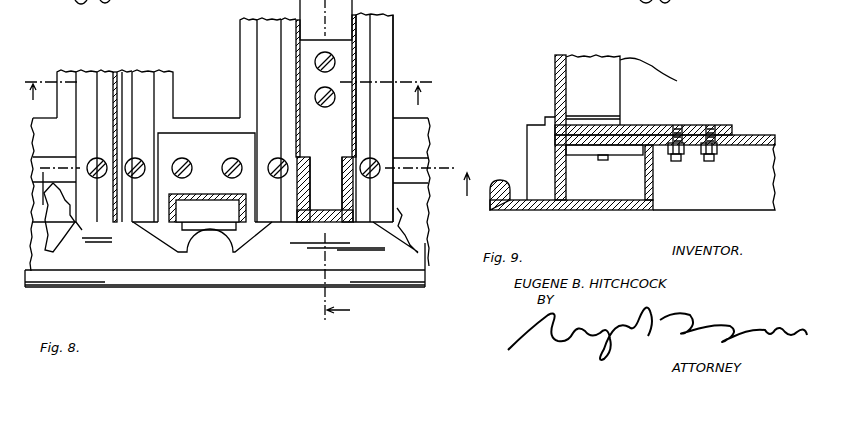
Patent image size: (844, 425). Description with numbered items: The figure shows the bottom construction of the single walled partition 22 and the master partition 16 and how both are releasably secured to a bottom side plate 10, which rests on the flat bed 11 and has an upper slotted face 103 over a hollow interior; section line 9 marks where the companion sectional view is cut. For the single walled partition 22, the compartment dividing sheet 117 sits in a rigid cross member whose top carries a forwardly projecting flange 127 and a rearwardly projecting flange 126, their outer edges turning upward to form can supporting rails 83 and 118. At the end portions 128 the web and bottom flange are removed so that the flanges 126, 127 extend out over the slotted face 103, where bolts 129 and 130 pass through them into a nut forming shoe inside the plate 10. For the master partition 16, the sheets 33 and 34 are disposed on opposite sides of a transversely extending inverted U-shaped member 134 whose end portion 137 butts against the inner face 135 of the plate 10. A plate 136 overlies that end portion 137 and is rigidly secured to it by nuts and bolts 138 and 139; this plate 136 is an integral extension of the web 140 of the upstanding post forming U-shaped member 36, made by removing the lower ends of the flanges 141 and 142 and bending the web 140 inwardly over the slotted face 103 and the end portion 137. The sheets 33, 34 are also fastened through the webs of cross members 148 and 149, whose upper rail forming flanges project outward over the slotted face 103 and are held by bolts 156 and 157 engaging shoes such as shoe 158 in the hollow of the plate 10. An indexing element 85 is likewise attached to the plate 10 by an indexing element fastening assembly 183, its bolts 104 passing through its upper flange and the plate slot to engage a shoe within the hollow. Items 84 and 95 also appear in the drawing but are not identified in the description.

In FIG. 8, the section line 9— 9 is at (328, 277).
In FIG. 8, the side plate 10 is at (62, 165).
In FIG. 9, the side plate 10 is at (655, 173).
In FIG. 8, the flat bed 11 is at (229, 84).
In FIG. 8, the master partition 16 is at (355, 5).
In FIG. 8, the single walled partition 22 is at (125, 72).
In FIG. 8, the sheet 33 is at (300, 137).
In FIG. 8, the sheet 34 is at (352, 118).
In FIG. 8, the U-shaped member 36 is at (300, 224).
In FIG. 9, the U-shaped member 36 is at (620, 58).
In FIG. 8, the can supporting rail 83 is at (173, 82).
In FIG. 8, the block 84 is at (257, 77).
In FIG. 8, the indexing element 85 is at (237, 255).
In FIG. 9, the foot 95 is at (566, 212).
In FIG. 8, the upper slotted face 103 is at (43, 172).
In FIG. 9, the upper slotted face 103 is at (627, 120).
In FIG. 8, the bolts 104 is at (220, 169).
In FIG. 8, the compartment dividing sheet 117 is at (113, 75).
In FIG. 8, the can supporting rail 118 is at (86, 72).
In FIG. 8, the rearwardly projecting flange 126 is at (68, 244).
In FIG. 8, the forwardly projecting flange 127 is at (94, 232).
In FIG. 8, the end portions 128 is at (76, 133).
In FIG. 8, the bolt 129 is at (89, 156).
In FIG. 8, the bolt 130 is at (143, 154).
In FIG. 9, the inverted U-shaped member 134 is at (754, 132).
In FIG. 9, the inner face 135 is at (655, 193).
In FIG. 9, the plate 136 is at (696, 125).
In FIG. 9, the end portion 137 is at (720, 148).
In FIG. 8, the nuts and bolts 138 is at (325, 89).
In FIG. 9, the nuts and bolts 138 is at (673, 125).
In FIG. 8, the nuts and bolts 139 is at (319, 56).
In FIG. 9, the nuts and bolts 139 is at (718, 125).
In FIG. 8, the web 140 is at (332, 214).
In FIG. 9, the web 140 is at (572, 83).
In FIG. 8, the flange 141 is at (312, 164).
In FIG. 9, the flange 141 is at (622, 79).
In FIG. 8, the flange 142 is at (343, 168).
In FIG. 8, the cross member 148 is at (240, 52).
In FIG. 8, the cross member 149 is at (395, 30).
In FIG. 8, the bolt 156 is at (271, 159).
In FIG. 8, the bolt 157 is at (377, 162).
In FIG. 9, the shoe 158 is at (580, 157).
In FIG. 8, the indexing element fastening assembly 183 is at (190, 156).